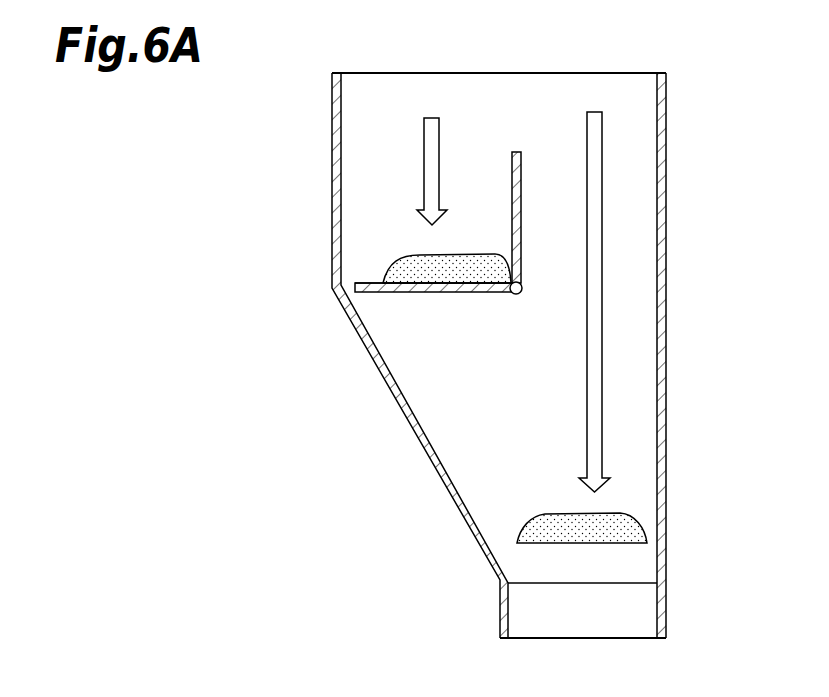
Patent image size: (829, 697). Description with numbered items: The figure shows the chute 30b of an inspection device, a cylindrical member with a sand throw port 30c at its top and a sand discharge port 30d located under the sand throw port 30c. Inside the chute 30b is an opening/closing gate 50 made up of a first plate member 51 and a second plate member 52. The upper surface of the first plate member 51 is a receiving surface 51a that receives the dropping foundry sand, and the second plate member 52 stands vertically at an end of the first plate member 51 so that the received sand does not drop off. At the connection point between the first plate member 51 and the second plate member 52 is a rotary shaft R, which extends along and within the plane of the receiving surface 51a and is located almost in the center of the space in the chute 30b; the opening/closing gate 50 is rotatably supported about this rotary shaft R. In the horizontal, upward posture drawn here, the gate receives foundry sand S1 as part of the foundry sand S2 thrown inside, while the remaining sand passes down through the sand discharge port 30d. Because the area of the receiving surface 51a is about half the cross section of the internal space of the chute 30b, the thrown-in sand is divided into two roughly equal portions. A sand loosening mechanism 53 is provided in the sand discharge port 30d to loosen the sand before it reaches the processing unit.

The chute 30b is at (666, 272).
The sand throw port 30c is at (612, 67).
The sand discharge port 30d is at (619, 588).
The opening/closing gate 50 is at (415, 189).
The first plate member 51 is at (407, 292).
The receiving surface 51a is at (374, 283).
The second plate member 52 is at (523, 218).
The sand loosening mechanism 53 is at (666, 610).
The rotary shaft R is at (522, 291).
The foundry sand S1 is at (402, 253).
The foundry sand S2 is at (536, 513).